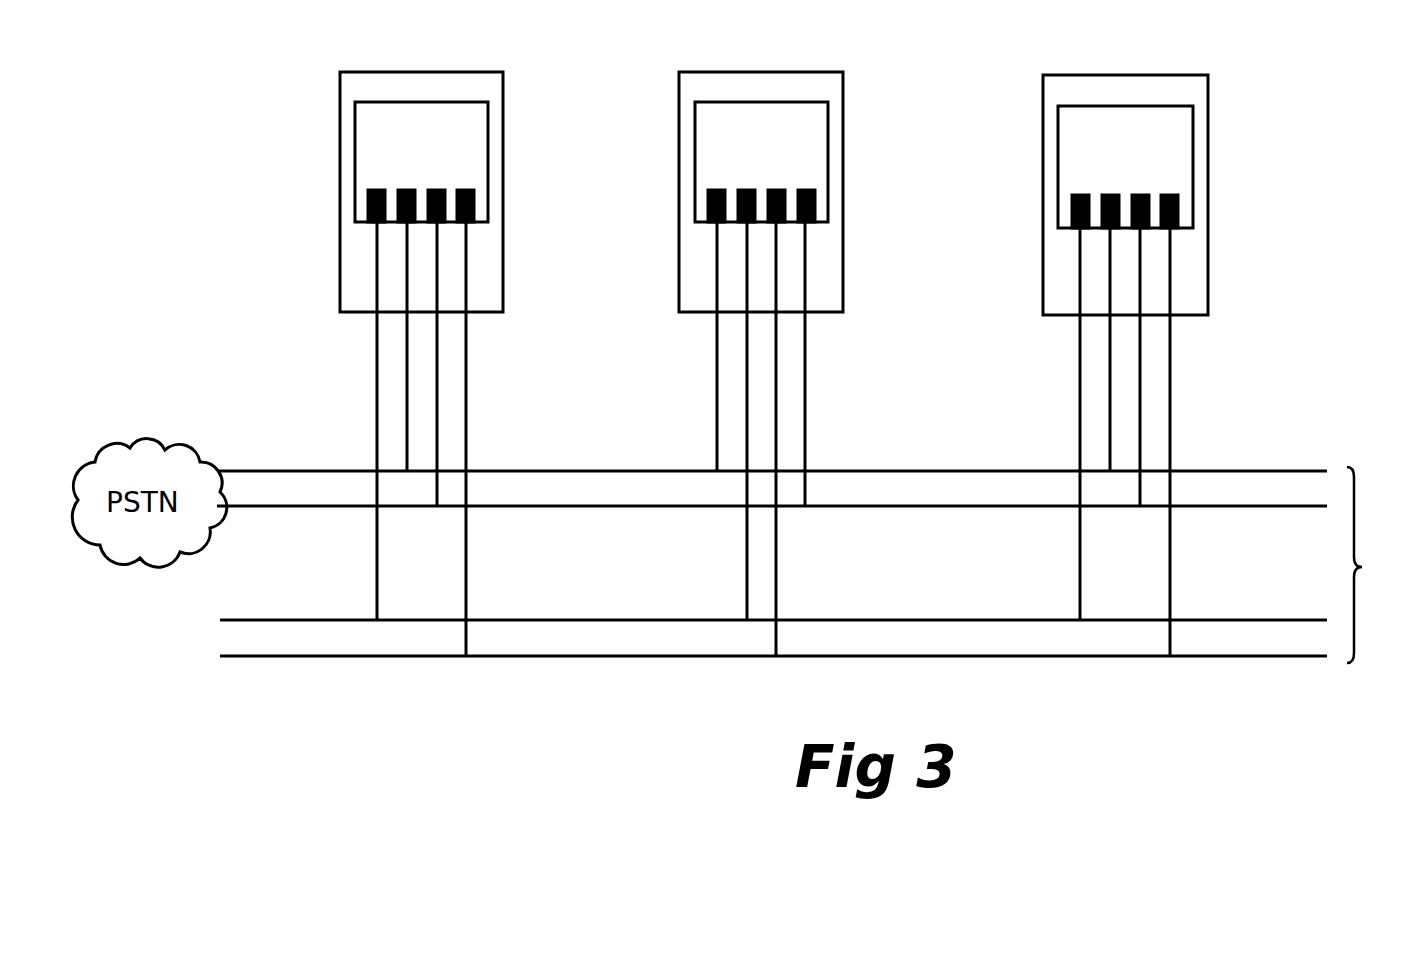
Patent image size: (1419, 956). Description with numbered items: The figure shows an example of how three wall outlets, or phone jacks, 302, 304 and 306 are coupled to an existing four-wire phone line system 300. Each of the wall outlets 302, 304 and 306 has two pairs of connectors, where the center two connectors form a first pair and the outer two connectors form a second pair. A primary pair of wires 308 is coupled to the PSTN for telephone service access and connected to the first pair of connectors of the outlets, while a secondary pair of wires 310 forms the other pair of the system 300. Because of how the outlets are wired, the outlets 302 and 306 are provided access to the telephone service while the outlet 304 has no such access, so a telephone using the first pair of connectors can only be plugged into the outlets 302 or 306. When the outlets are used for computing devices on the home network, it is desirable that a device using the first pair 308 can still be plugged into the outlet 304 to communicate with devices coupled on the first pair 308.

The 4-wire phone line system 300 is at (1383, 565).
The wall outlet 302 is at (435, 80).
The wall outlet 304 is at (792, 82).
The wall outlet 306 is at (1163, 83).
The primary pair of wires 308 is at (761, 452).
The secondary pair of wires 310 is at (759, 683).